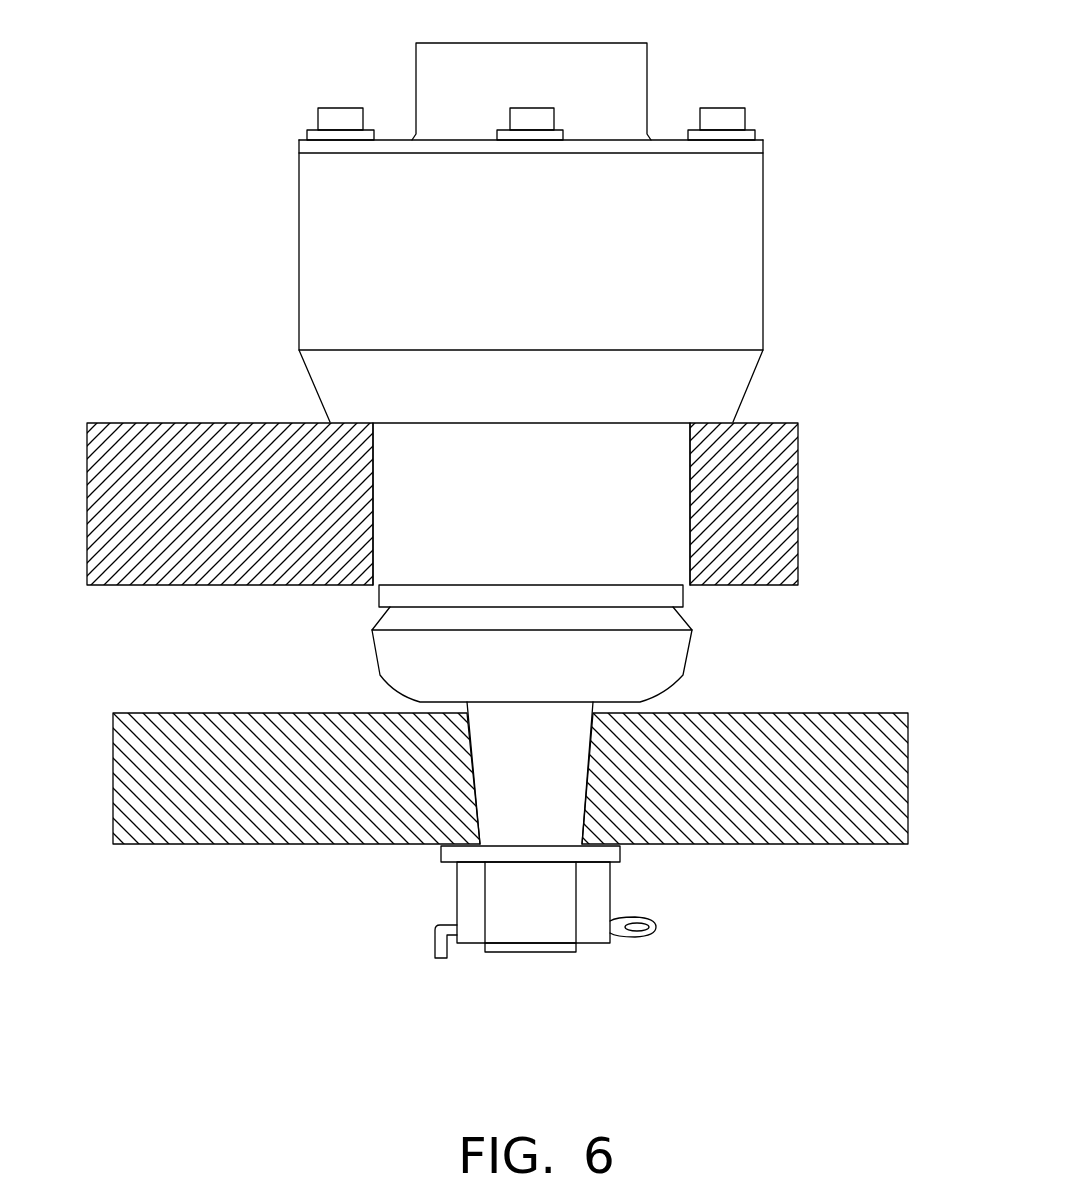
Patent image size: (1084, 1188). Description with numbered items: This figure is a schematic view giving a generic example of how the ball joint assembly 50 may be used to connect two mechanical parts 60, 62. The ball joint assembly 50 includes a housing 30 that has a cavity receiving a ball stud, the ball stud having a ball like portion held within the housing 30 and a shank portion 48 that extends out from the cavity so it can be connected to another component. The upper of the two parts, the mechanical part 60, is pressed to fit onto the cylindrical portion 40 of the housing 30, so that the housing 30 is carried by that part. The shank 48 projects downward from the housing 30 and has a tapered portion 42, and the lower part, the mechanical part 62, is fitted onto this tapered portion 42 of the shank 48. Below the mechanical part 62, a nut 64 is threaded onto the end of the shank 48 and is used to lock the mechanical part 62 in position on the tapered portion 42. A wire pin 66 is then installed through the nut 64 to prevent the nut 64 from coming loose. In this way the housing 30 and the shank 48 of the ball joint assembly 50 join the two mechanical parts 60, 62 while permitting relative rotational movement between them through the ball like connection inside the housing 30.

The housing 30 is at (729, 232).
The cylindrical portion 40 is at (643, 500).
The tapered portion 42 is at (563, 787).
The shank portion 48 is at (493, 785).
The ball joint assembly 50 is at (285, 160).
The mechanical part 60 is at (272, 414).
The mechanical part 62 is at (835, 698).
The nut 64 is at (440, 896).
The wire pin 66 is at (650, 960).